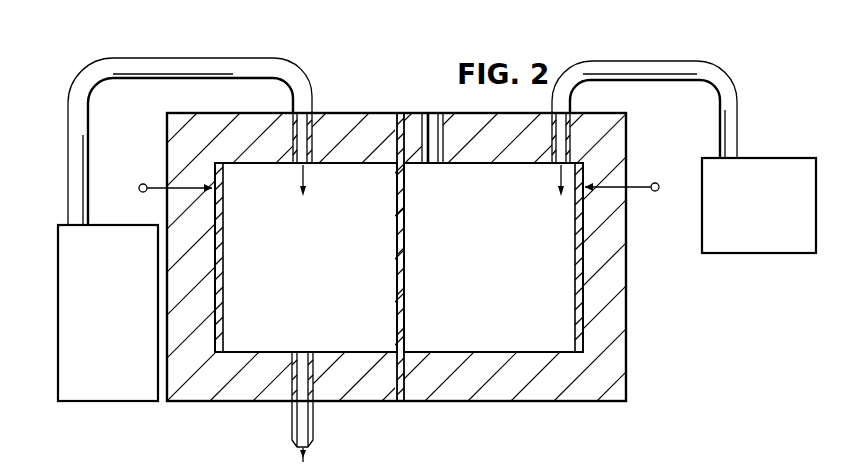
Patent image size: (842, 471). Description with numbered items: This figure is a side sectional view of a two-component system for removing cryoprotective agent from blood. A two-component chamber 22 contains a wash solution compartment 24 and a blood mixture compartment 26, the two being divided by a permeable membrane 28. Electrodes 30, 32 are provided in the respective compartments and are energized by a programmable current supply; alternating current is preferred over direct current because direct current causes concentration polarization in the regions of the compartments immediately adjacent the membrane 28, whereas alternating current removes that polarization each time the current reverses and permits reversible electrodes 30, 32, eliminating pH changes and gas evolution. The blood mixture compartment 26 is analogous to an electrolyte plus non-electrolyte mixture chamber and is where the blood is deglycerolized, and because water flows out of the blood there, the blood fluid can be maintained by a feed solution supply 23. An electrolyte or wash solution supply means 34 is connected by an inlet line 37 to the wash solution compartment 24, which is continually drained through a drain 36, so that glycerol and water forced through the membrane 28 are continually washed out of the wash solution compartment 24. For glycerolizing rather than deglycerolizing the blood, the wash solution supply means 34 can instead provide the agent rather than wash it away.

The two-component chamber 22 is at (620, 327).
The feed solution supply 23 is at (768, 253).
The wash solution compartment 24 is at (275, 328).
The blood mixture compartment 26 is at (593, 402).
The permeable membrane 28 is at (404, 222).
The electrode 30 is at (212, 190).
The electrode 32 is at (585, 196).
The wash solution supply means 34 is at (107, 392).
The drain 36 is at (310, 421).
The wash solution inlet tube 37 is at (300, 73).